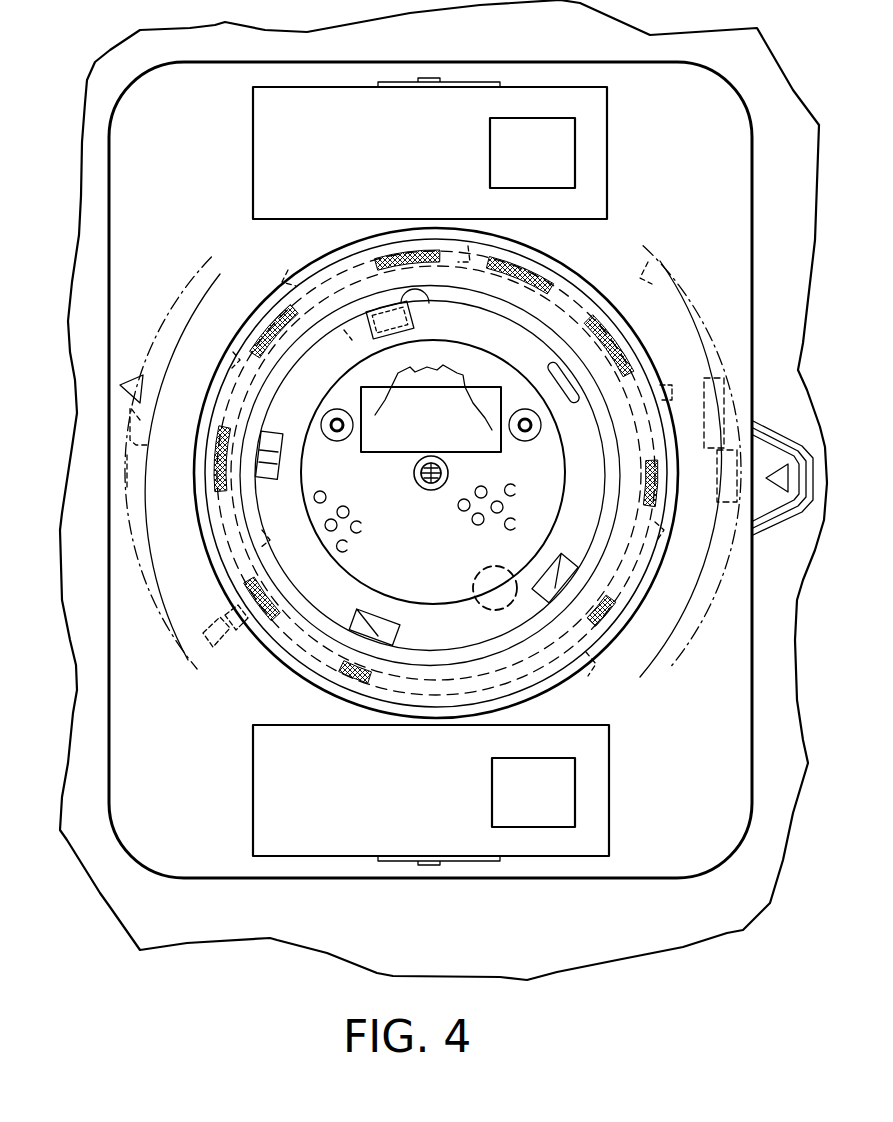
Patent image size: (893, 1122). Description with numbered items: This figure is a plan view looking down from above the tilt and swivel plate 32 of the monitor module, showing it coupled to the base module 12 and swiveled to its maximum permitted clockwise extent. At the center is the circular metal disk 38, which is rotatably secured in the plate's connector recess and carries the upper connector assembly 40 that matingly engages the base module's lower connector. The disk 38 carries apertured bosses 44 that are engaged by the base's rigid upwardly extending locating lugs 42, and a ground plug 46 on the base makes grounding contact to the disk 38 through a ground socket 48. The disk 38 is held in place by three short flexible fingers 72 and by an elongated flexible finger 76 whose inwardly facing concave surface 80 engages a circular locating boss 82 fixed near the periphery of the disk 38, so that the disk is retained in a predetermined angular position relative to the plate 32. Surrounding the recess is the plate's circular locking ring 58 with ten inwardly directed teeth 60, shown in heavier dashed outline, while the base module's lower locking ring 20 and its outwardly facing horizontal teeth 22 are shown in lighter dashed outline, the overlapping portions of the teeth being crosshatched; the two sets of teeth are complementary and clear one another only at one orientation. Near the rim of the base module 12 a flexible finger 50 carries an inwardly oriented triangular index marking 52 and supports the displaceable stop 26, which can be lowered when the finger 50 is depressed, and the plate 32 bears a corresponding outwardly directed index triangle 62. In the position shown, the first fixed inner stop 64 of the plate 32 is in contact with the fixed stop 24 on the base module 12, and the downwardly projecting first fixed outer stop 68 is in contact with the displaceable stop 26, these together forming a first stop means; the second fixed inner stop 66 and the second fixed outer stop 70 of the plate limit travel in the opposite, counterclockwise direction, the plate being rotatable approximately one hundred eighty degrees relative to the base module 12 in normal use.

The base module 12 is at (443, 490).
The lower locking ring 20 is at (577, 287).
The outwardly facing horizontal teeth 22 is at (473, 252).
The fixed stop 24 is at (200, 672).
The displaceable stop 26 is at (730, 557).
The tilt and swivel plate 32 is at (430, 470).
The circular metal disk 38 is at (430, 476).
The connector assembly 40 is at (474, 445).
The locating lugs 42 is at (340, 410).
The apertured bosses 44 is at (335, 438).
The ground plug 46 is at (431, 456).
The ground socket 48 is at (425, 484).
The flexible finger 50 is at (778, 512).
The index marking 52 is at (776, 470).
The circular locking ring 58 is at (316, 290).
The inwardly directed teeth 60 is at (428, 250).
The index triangle 62 is at (132, 382).
The first fixed inner stop 64 is at (238, 640).
The second fixed inner stop 66 is at (667, 385).
The first fixed outer stop 68 is at (708, 352).
The second fixed outer stop 70 is at (128, 458).
The flexible fingers 72 is at (274, 480).
The elongated flexible finger 76 is at (430, 298).
The concave surface 80 is at (372, 346).
The circular locating boss 82 is at (472, 584).